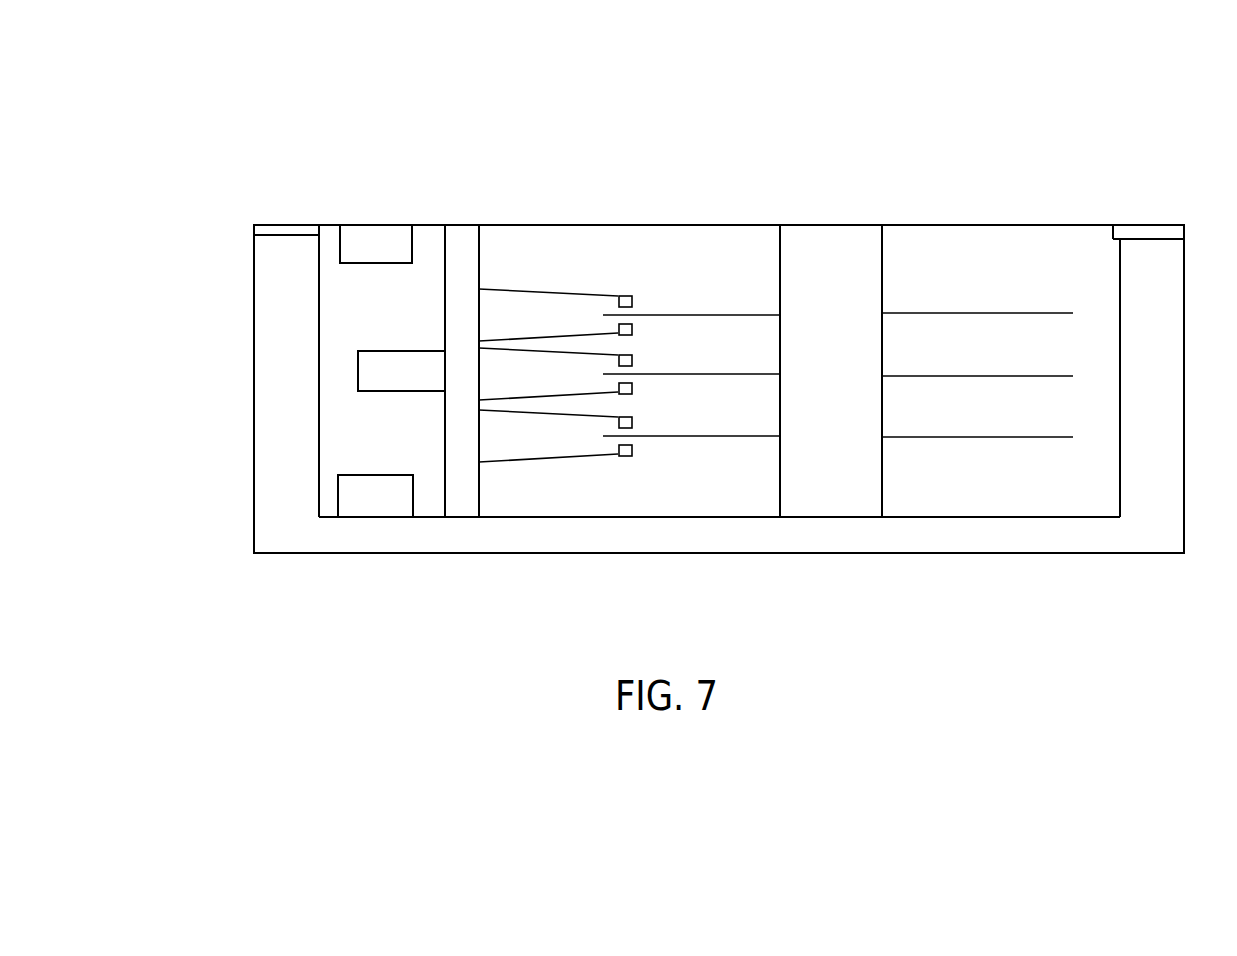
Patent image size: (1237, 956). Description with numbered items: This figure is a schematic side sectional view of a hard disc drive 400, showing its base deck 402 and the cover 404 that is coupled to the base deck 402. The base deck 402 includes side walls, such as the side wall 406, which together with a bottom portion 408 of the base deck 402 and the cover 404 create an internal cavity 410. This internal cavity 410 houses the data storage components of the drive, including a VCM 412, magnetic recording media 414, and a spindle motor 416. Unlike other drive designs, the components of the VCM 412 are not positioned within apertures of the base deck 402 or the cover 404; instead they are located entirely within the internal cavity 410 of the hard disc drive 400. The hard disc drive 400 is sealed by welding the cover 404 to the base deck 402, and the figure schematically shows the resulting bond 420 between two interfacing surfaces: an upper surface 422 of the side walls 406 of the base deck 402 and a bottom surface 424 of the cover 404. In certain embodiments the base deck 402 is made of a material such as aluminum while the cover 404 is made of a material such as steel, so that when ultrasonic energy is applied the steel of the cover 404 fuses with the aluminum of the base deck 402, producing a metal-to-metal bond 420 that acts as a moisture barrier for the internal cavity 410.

The hard disc drive 400 is at (304, 109).
The base deck 402 is at (234, 330).
The cover 404 is at (718, 223).
The side wall 406 is at (266, 458).
The bottom portion 408 is at (505, 542).
The internal cavity 410 is at (952, 242).
The VCM 412 is at (396, 344).
The magnetic recording media 414 is at (662, 438).
The spindle motor 416 is at (790, 478).
The bond 420 is at (255, 230).
The upper surface 422 is at (276, 238).
The bottom surface 424 is at (290, 222).